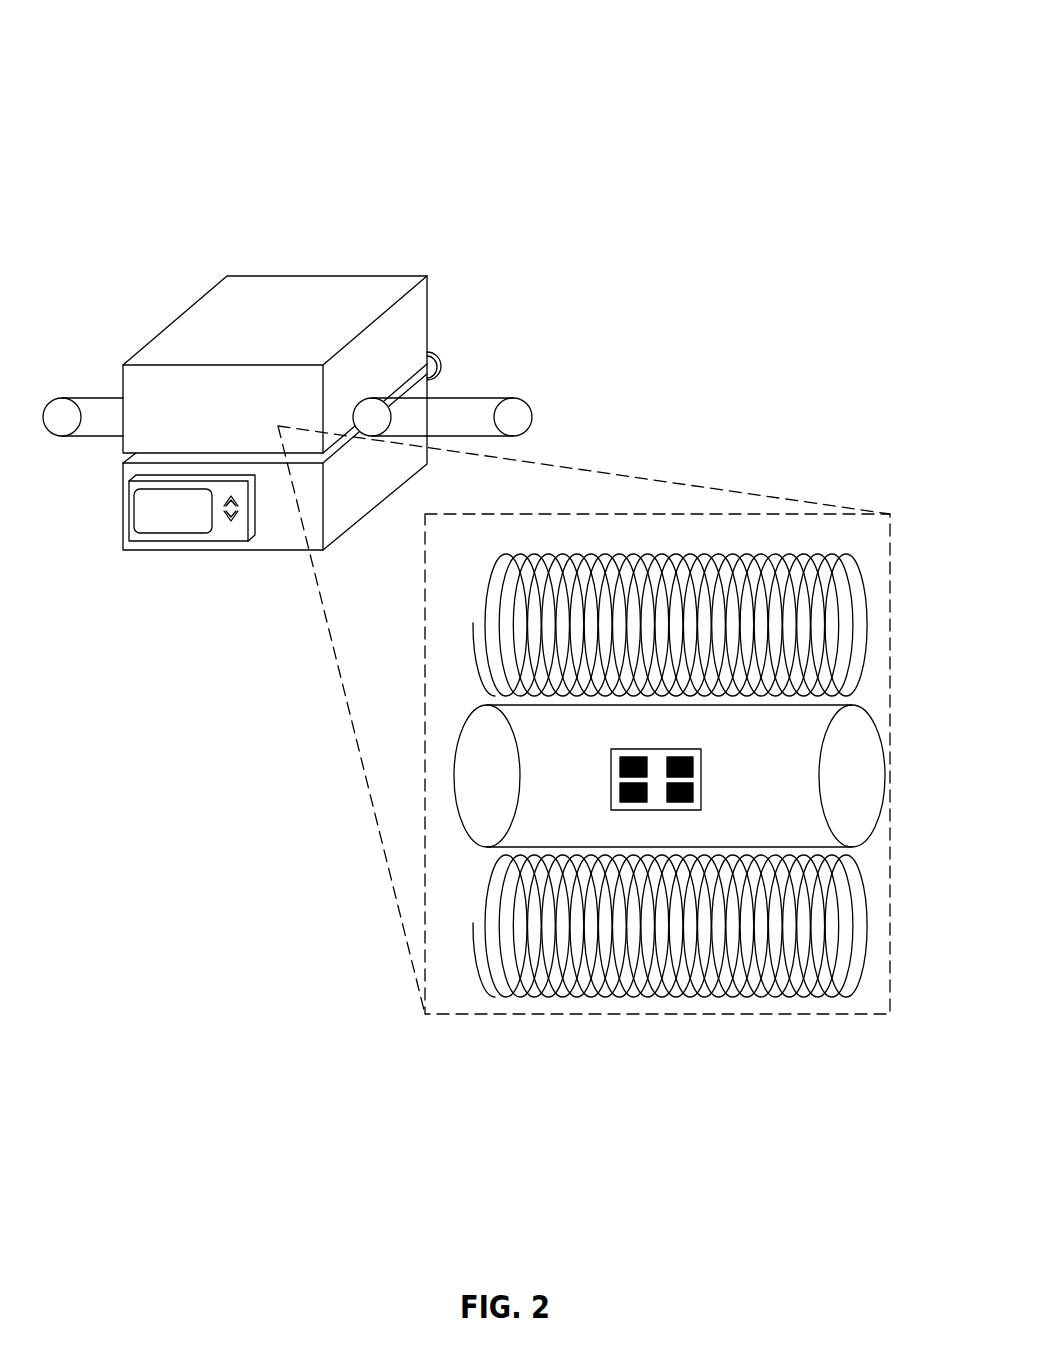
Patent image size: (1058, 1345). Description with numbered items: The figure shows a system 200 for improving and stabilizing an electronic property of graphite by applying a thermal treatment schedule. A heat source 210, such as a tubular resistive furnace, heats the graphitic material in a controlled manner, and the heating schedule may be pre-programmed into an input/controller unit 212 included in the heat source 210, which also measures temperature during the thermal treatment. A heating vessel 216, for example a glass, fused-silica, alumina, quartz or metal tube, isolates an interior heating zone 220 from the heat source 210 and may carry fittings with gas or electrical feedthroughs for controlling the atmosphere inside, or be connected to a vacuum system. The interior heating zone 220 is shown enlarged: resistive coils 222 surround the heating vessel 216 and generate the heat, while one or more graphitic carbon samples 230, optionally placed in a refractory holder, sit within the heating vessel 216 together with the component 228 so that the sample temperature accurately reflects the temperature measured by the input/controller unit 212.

The system 200 is at (865, 27).
The heat source 210 is at (150, 343).
The input/controller unit 212 is at (130, 512).
The heating vessel 216 is at (535, 407).
The interior heating zone 220 is at (425, 613).
The resistive coils 222 is at (488, 682).
The substrate 228 is at (701, 768).
The graphitic carbon samples 230 is at (701, 796).